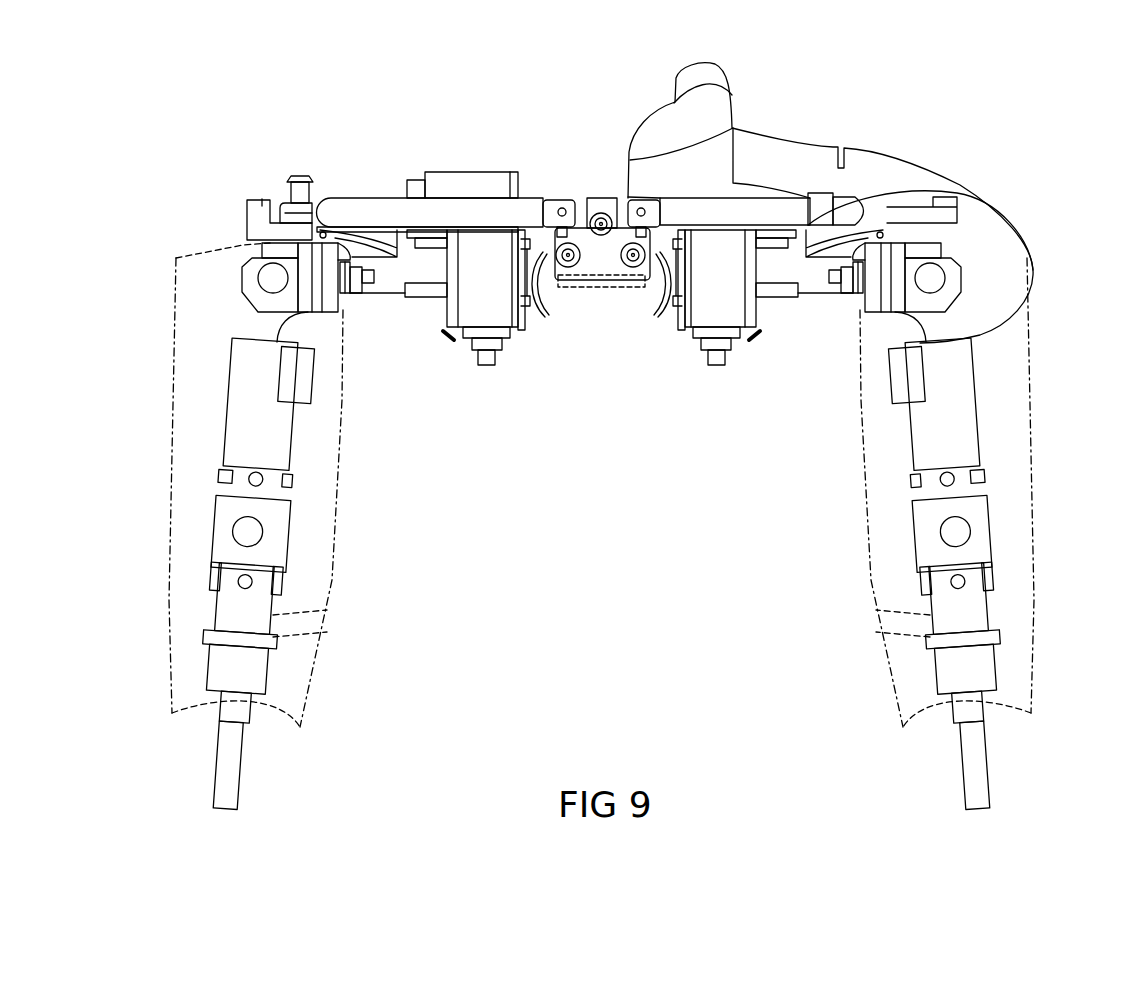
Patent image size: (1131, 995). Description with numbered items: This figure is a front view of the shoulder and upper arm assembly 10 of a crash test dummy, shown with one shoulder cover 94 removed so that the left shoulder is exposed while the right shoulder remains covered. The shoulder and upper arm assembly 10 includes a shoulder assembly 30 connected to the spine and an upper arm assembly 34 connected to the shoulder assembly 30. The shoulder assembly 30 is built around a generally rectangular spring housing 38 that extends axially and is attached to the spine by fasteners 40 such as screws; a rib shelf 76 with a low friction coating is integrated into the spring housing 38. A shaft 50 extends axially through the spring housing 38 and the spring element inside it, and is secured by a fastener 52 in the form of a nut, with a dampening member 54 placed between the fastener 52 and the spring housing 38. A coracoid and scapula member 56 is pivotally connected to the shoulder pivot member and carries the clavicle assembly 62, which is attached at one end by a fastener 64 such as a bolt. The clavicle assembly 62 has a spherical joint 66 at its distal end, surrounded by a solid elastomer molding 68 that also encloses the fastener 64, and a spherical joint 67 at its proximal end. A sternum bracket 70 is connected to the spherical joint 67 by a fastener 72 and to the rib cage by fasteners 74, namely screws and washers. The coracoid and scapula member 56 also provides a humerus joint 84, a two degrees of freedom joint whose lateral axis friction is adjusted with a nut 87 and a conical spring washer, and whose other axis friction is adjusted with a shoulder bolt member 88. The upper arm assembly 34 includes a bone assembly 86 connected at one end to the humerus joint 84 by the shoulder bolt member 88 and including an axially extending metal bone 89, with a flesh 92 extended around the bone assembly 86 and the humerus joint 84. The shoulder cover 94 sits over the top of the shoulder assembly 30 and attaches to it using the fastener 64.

The shoulder and upper arm assembly 10 is at (255, 168).
The shoulder assembly 30 is at (449, 335).
The upper arm assembly 34 is at (166, 537).
The spring housing 38 is at (488, 172).
The fasteners 40 is at (536, 316).
The shaft 50 is at (485, 362).
The fastener 52 is at (500, 350).
The dampening member 54 is at (470, 330).
The coracoid and scapula member 56 is at (262, 199).
The clavicle assembly 62 is at (456, 208).
The fastener 64 is at (304, 175).
The spherical joint 66 is at (283, 216).
The spherical joint 67 is at (545, 261).
The solid elastomer molding 68 is at (310, 191).
The sternum bracket 70 is at (598, 270).
The fastener 72 is at (561, 207).
The fasteners 74 is at (567, 268).
The rib shelf 76 is at (430, 292).
The humerus joint 84 is at (325, 300).
The bone assembly 86 is at (246, 769).
The nut 87 is at (360, 290).
The shoulder bolt member 88 is at (270, 278).
The metal bone 89 is at (257, 668).
The flesh 92 is at (338, 518).
The shoulder cover 94 is at (858, 167).